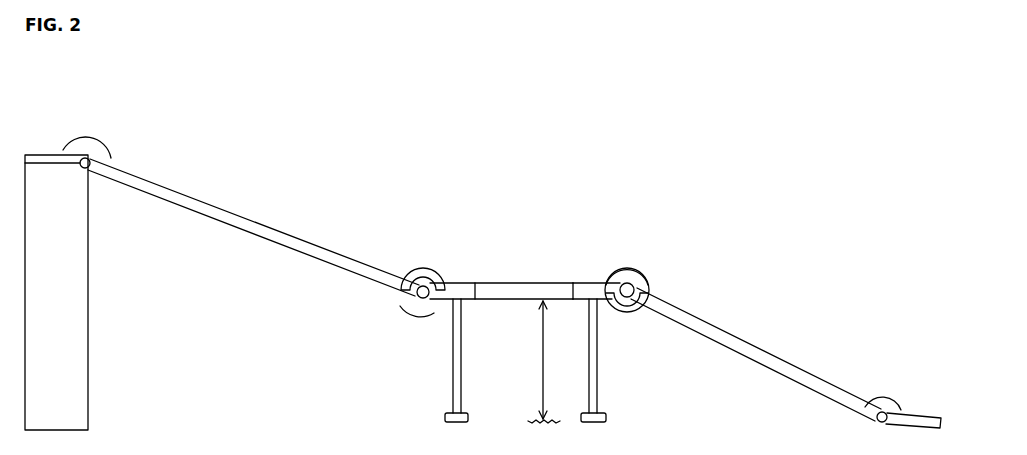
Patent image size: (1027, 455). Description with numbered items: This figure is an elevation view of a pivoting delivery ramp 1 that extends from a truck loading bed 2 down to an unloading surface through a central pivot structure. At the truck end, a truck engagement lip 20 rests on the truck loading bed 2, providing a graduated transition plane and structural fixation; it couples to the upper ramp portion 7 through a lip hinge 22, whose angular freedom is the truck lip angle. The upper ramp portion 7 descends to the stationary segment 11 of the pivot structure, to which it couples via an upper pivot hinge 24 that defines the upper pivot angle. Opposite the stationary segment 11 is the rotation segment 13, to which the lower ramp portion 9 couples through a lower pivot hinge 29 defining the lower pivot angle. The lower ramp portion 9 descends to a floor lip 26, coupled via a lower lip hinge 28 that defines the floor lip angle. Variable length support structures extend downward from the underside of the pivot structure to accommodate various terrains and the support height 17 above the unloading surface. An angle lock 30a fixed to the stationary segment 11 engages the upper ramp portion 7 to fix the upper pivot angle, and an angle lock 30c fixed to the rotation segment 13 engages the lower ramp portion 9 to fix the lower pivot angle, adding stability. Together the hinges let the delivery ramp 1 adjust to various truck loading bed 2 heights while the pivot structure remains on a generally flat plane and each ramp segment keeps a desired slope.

The pivoting delivery ramp 1 is at (746, 171).
The truck loading bed 2 is at (88, 212).
The upper ramp portion 7 is at (235, 213).
The lower ramp portion 9 is at (742, 340).
The stationary segment 11 is at (460, 283).
The rotation segment 13 is at (587, 283).
The support height 17 is at (542, 337).
The truck engagement lip 20 is at (48, 156).
The lip hinge 22 is at (92, 170).
The upper pivot hinge 24 is at (428, 286).
The floor lip 26 is at (925, 415).
The lower lip hinge 28 is at (877, 423).
The lower pivot hinge 29 is at (627, 303).
The angle lock 30a is at (407, 277).
The angle lock 30c is at (649, 285).